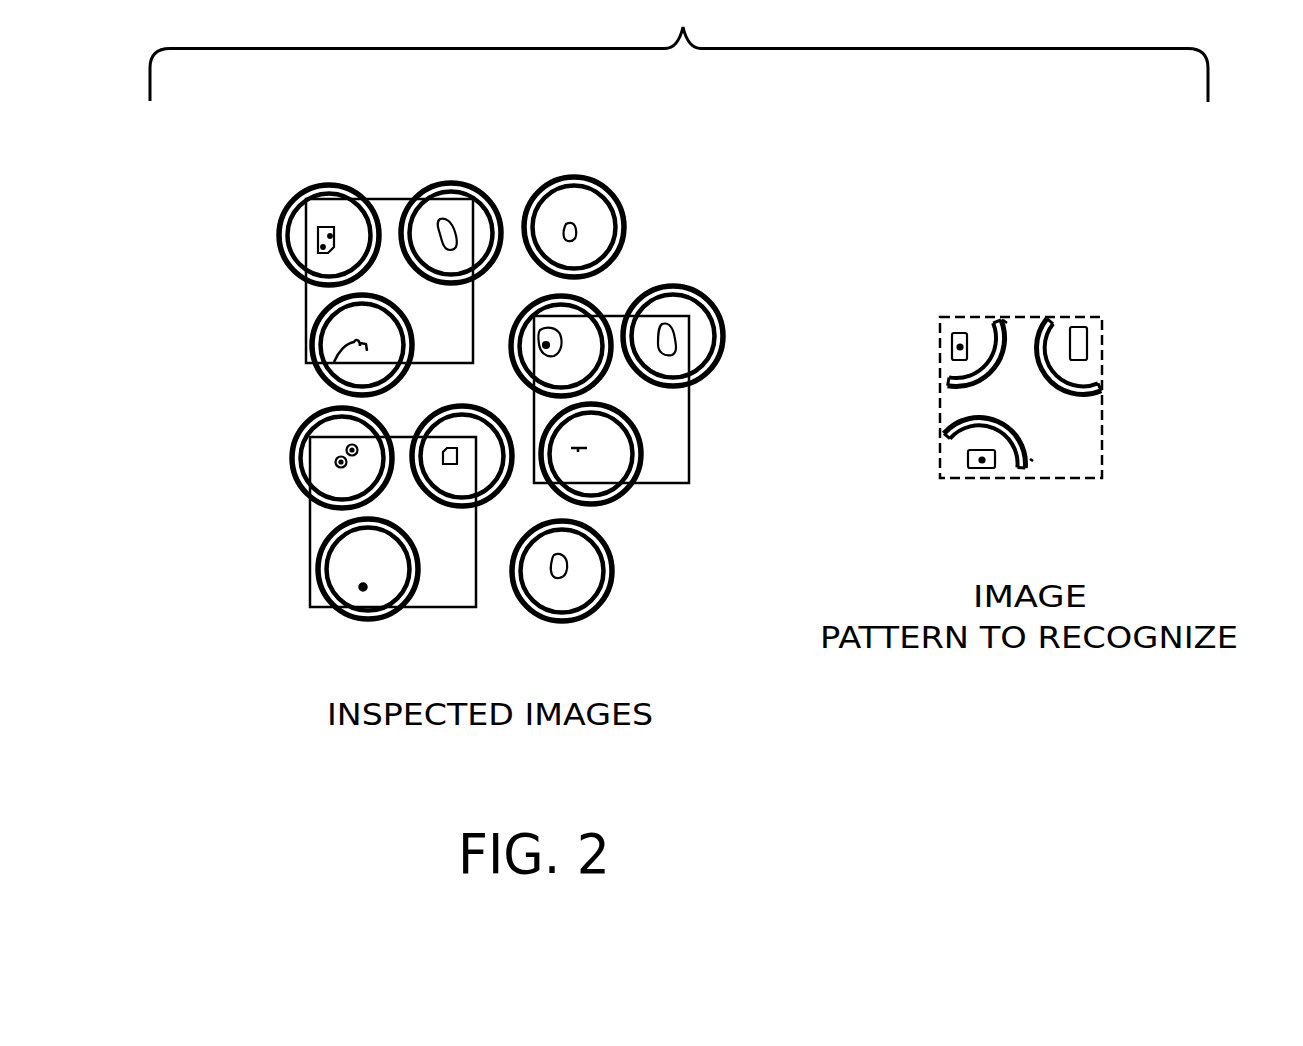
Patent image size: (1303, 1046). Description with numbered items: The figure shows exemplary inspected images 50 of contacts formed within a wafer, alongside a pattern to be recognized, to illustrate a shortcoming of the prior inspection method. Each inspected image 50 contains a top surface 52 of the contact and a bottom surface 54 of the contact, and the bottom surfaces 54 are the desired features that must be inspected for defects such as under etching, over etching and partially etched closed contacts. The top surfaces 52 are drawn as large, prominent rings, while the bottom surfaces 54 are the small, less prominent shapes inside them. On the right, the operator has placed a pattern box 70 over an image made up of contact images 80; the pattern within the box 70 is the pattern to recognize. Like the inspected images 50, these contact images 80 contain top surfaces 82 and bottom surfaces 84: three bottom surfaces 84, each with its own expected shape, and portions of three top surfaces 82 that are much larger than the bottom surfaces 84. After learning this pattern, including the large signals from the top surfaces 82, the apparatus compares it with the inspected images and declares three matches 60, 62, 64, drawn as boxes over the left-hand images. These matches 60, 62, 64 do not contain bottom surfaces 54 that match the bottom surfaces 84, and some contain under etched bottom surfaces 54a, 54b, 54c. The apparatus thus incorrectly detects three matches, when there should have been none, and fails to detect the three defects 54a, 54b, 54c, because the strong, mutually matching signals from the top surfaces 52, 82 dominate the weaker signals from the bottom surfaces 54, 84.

The inspected image 50 is at (283, 199).
The top surface 52 is at (332, 184).
The bottom surface 54 is at (318, 254).
The under etched bottom surface 54a is at (363, 587).
The under etched bottom surface 54b is at (578, 450).
The under etched bottom surface 54c is at (350, 347).
The match 60 is at (392, 198).
The match 62 is at (665, 483).
The match 64 is at (310, 533).
The pattern box 70 is at (1106, 455).
The contact image 80 is at (1017, 337).
The top surface 82 is at (999, 318).
The bottom surface 84 is at (958, 333).